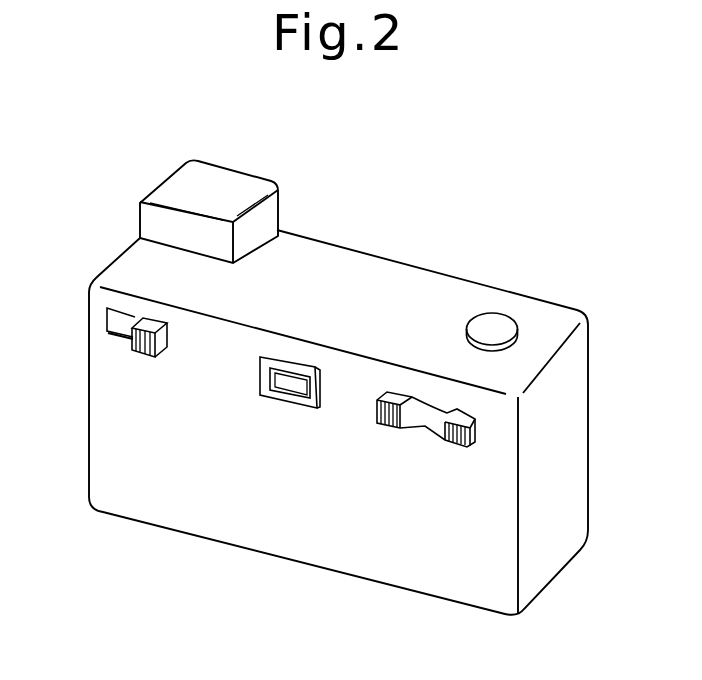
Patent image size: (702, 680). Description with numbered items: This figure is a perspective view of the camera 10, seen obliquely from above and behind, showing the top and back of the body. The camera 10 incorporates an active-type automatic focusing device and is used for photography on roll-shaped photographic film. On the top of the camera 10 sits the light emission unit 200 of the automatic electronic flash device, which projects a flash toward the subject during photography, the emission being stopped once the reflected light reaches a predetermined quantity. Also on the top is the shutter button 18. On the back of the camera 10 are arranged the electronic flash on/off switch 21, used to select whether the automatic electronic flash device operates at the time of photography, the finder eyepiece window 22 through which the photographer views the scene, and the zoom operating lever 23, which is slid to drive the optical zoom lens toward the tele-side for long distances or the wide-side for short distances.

The camera 10 is at (417, 190).
The light emission unit 200 is at (222, 190).
The shutter button 18 is at (500, 312).
The electronic flash on/off switch 21 is at (150, 323).
The finder eyepiece window 22 is at (288, 358).
The zoom operating lever 23 is at (408, 397).